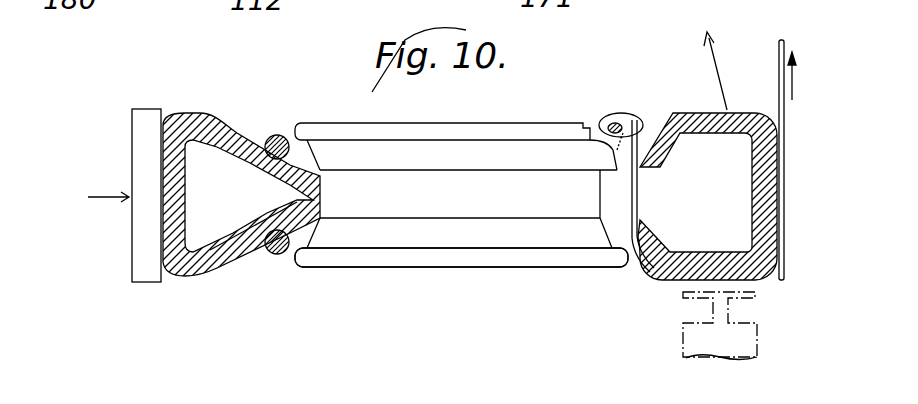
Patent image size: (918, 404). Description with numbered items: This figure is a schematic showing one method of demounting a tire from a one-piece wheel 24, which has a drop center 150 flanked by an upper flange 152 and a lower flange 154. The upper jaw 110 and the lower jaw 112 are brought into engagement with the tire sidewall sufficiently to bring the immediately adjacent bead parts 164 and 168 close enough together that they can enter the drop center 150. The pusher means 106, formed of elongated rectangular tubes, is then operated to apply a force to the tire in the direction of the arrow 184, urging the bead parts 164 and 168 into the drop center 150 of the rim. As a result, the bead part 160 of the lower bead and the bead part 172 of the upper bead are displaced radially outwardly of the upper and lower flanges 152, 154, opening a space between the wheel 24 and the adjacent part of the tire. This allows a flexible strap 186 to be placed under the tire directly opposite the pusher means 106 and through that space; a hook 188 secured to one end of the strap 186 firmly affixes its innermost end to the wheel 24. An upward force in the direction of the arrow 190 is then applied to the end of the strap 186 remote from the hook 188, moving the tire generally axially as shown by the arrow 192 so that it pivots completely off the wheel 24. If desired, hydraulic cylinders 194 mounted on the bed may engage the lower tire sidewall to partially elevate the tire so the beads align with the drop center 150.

The one-piece wheel 24 is at (440, 257).
The pusher means 106 is at (140, 143).
The upper jaw 110 is at (273, 135).
The lower jaw 112 is at (270, 256).
The drop center 150 is at (508, 187).
The upper flange 152 is at (480, 127).
The lower flange 154 is at (522, 257).
The bead part of the lower bead 160 is at (622, 222).
The bead part 164 is at (323, 180).
The bead part 168 is at (318, 215).
The bead part of the upper bead 172 is at (657, 130).
The arrow 184 is at (107, 198).
The flexible strap 186 is at (787, 123).
The hook 188 is at (613, 120).
The arrow 190 is at (797, 82).
The arrow 192 is at (715, 64).
The hydraulic cylinders 194 is at (757, 340).